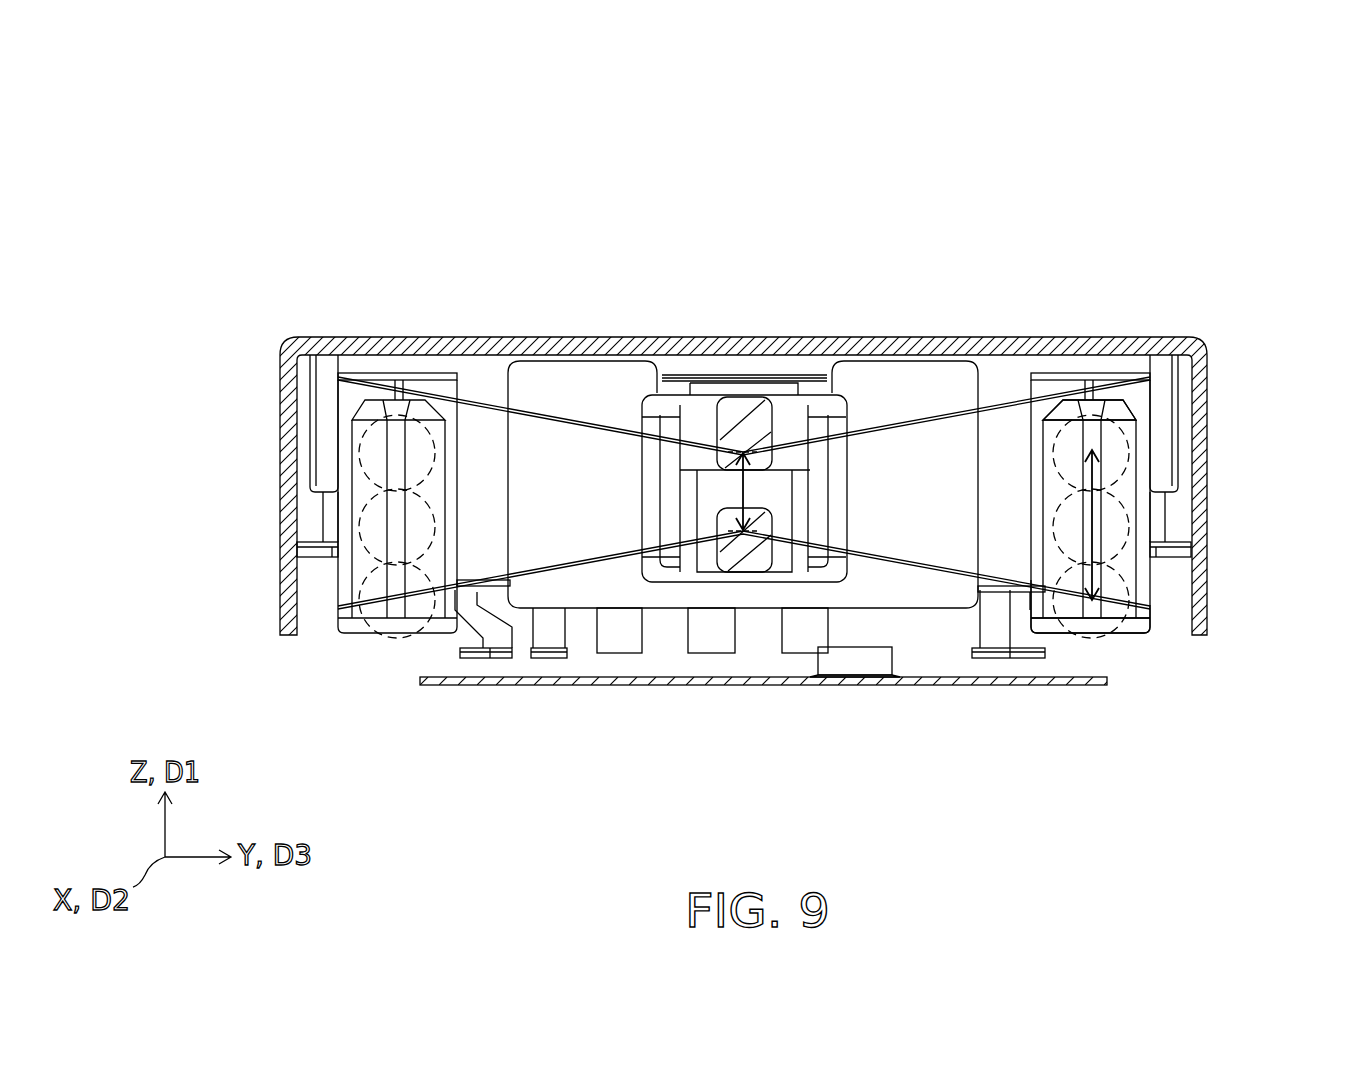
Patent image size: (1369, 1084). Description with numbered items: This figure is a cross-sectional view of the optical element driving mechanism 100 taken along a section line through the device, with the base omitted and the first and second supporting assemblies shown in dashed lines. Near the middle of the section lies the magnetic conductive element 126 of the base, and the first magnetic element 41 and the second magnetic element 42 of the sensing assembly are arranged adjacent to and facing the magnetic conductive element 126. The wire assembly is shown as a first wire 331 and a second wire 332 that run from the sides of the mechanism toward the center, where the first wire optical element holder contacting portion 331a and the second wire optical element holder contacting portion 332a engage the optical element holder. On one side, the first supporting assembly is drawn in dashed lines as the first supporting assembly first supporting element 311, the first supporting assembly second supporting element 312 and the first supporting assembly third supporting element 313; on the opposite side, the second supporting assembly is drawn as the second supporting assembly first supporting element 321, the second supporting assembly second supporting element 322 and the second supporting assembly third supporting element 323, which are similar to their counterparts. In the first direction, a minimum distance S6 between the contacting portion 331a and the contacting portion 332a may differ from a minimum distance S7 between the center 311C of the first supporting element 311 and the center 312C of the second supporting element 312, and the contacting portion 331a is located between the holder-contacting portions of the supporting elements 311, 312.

The optical element driving mechanism 100 is at (163, 99).
The magnetic conductive element 126 is at (938, 465).
The first magnetic element 41 is at (835, 470).
The second magnetic element 42 is at (651, 468).
The first wire 331 is at (913, 430).
The second wire 332 is at (913, 565).
The first wire optical element holder contacting portion 331a is at (738, 460).
The second wire optical element holder contacting portion 332a is at (738, 565).
The first supporting assembly first supporting element 311 is at (1113, 462).
The first supporting assembly second supporting element 312 is at (1153, 605).
The first supporting assembly third supporting element 313 is at (1097, 530).
The center of the first supporting assembly first supporting element 311C is at (1128, 445).
The center of the first supporting assembly second supporting element 312C is at (1140, 612).
The second supporting assembly first supporting element 321 is at (372, 455).
The second supporting assembly second supporting element 322 is at (365, 605).
The second supporting assembly third supporting element 323 is at (370, 530).
The minimum distance between the first wire and second wire optical element holder c S6 is at (758, 491).
The minimum distance between the centers of the first and second supporting elements S7 is at (1099, 540).